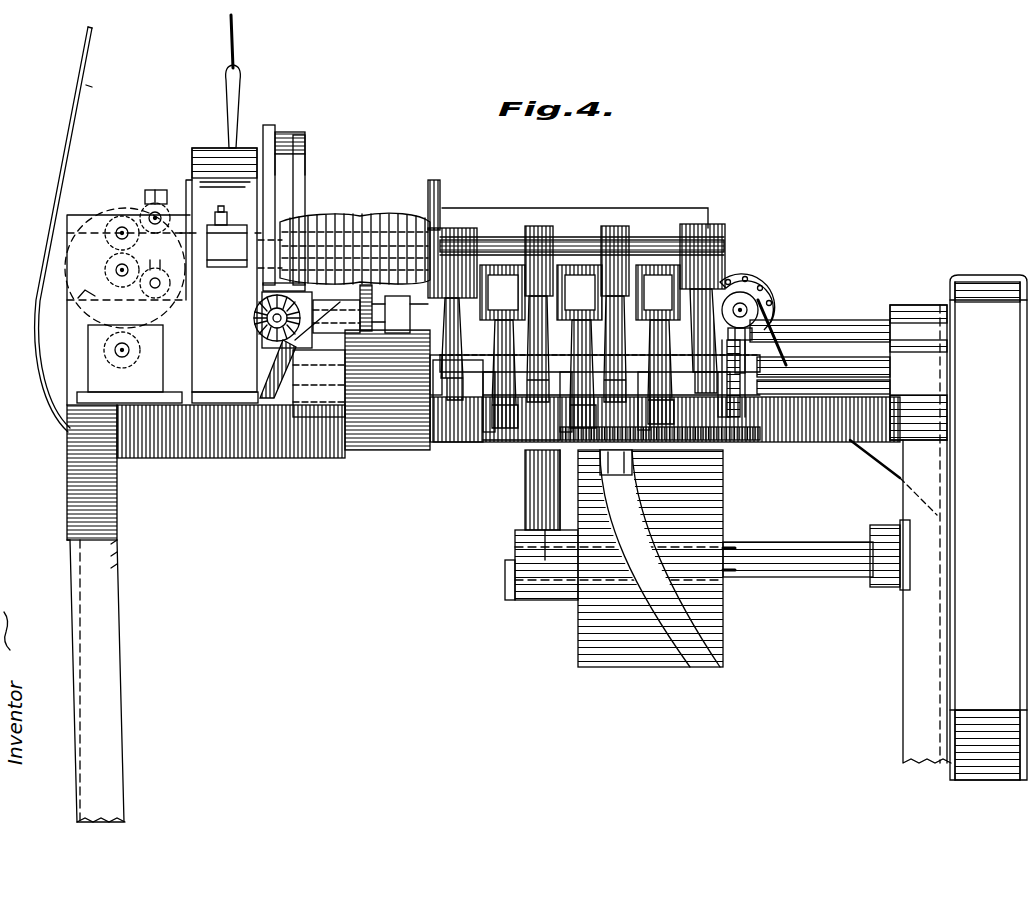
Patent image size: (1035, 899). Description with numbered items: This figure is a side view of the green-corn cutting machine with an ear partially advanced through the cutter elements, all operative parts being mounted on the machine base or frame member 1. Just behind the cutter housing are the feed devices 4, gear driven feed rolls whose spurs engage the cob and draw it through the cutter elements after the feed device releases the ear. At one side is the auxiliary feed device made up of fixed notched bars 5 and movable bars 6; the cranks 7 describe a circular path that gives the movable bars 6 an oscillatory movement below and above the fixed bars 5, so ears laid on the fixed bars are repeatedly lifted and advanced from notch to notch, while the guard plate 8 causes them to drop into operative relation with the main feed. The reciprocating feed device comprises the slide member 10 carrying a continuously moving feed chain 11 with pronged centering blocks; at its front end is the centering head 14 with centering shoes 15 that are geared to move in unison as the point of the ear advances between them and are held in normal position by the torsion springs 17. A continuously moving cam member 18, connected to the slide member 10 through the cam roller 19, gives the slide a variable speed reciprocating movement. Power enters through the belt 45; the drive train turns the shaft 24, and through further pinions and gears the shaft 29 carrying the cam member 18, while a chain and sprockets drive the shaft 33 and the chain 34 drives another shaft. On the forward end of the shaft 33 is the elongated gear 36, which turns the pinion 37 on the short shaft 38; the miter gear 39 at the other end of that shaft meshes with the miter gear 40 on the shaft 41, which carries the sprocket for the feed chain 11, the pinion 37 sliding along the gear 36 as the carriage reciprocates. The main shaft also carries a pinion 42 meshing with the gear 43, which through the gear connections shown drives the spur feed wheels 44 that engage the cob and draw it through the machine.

The machine base or frame member 1 is at (272, 440).
The feed devices 4 is at (167, 364).
The fixed notched bars 5 is at (540, 236).
The movable bars 6 is at (580, 346).
The cranks 7 is at (518, 440).
The guard plate 8 is at (571, 216).
The slide member 10 is at (757, 336).
The feed chain 11 is at (750, 292).
The centering head 14 is at (268, 130).
The centering shoes 15 is at (322, 262).
The torsion springs 17 is at (304, 142).
The cam member 18 is at (614, 558).
The cam roller 19 is at (622, 470).
The shaft 24 is at (794, 336).
The shaft 29 is at (800, 548).
The shaft 33 is at (850, 370).
The chain 34 is at (740, 388).
The elongated gear 36 is at (406, 447).
The pinion 37 is at (362, 310).
The short shaft 38 is at (410, 312).
The miter gear 39 is at (288, 348).
The miter gear 40 is at (262, 315).
The shaft 41 is at (266, 326).
The pinion 42 is at (118, 352).
The gear 43 is at (90, 308).
The spur feed wheels 44 is at (148, 212).
The belt 45 is at (64, 150).